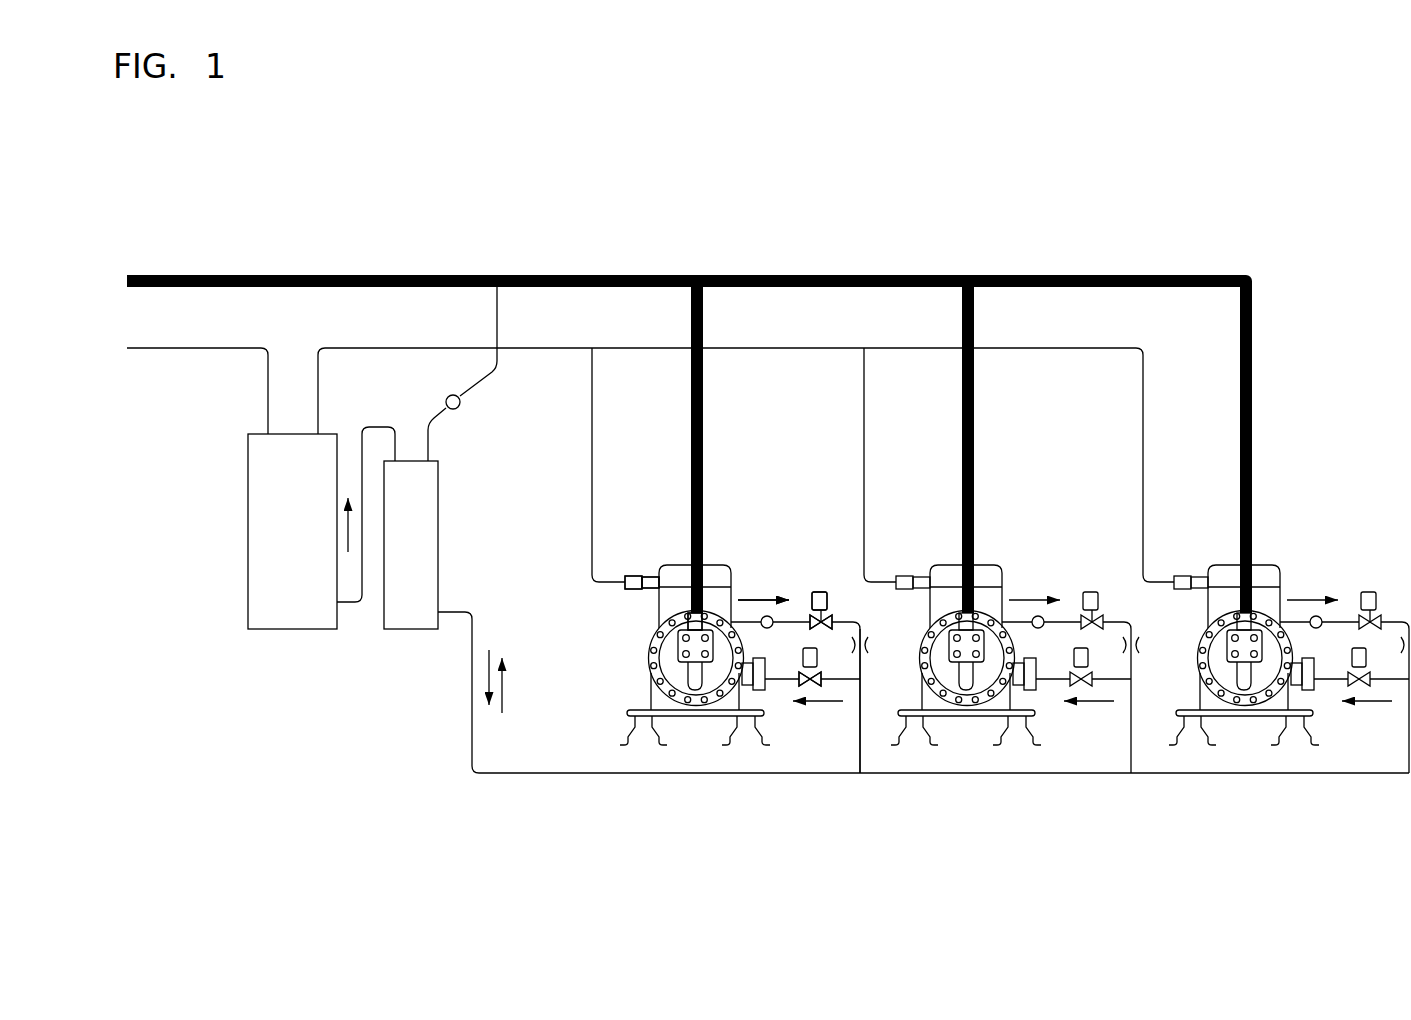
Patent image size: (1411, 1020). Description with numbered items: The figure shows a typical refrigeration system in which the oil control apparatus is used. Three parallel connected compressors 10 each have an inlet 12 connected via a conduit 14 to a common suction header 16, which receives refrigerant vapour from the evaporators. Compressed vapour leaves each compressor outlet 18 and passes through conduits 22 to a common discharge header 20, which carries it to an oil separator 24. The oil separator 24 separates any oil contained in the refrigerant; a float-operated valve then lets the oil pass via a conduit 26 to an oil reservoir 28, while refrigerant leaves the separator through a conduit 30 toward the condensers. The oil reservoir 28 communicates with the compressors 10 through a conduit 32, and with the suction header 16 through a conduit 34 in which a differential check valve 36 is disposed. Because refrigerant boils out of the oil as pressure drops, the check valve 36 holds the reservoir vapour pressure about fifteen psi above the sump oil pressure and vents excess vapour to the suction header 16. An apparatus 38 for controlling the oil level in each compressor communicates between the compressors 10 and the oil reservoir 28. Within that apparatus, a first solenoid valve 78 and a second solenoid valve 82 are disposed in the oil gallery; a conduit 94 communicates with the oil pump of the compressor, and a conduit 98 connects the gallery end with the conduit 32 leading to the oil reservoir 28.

The compressor 10 is at (733, 557).
The inlet 12 is at (688, 617).
The conduit 14 is at (689, 462).
The common suction header 16 is at (757, 268).
The compressor outlet 18 is at (640, 568).
The common discharge header 20 is at (559, 338).
The conduit 22 is at (582, 523).
The oil separator 24 is at (236, 632).
The conduit 26 is at (347, 615).
The oil reservoir 28 is at (448, 520).
The conduit 30 is at (252, 338).
The conduit 32 is at (463, 732).
The conduit 34 is at (478, 341).
The differential check valve 36 is at (473, 410).
The apparatus for controlling the oil level 38 is at (803, 572).
The first solenoid valve 78 is at (810, 689).
The second solenoid valve 82 is at (829, 608).
The conduit 94 is at (752, 610).
The conduit 98 is at (903, 722).